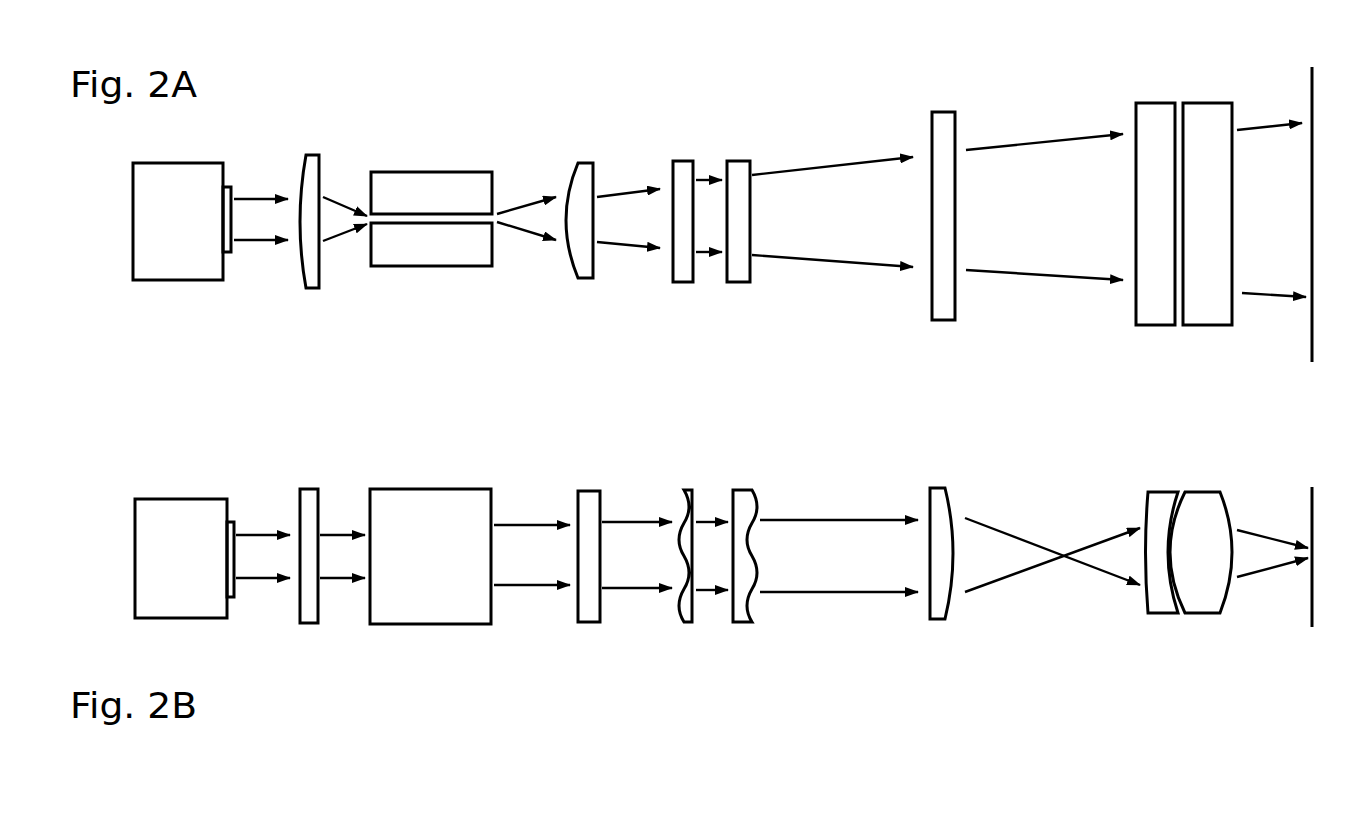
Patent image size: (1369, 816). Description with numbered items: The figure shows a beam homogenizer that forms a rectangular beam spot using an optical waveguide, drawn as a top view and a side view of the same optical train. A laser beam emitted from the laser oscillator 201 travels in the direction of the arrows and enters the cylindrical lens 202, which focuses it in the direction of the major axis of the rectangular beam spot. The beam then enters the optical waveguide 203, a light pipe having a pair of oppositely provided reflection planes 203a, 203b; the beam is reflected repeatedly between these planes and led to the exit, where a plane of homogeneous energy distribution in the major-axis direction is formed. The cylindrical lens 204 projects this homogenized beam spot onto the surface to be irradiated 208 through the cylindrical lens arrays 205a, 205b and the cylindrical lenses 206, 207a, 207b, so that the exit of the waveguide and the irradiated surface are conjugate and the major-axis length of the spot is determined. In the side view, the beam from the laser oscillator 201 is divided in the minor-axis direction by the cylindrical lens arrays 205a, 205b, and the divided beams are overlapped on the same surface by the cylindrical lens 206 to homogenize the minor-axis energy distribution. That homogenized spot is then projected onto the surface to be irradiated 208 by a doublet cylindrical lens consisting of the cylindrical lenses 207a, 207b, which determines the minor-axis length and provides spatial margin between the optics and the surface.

In FIG. 2A, the laser oscillator 201 is at (177, 262).
In FIG. 2B, the laser oscillator 201 is at (172, 520).
In FIG. 2A, the cylindrical lens 202 is at (310, 278).
In FIG. 2B, the cylindrical lens 202 is at (305, 510).
In FIG. 2A, the optical waveguide 203 is at (442, 300).
In FIG. 2B, the optical waveguide 203 is at (440, 510).
In FIG. 2A, the reflection plane 203a is at (431, 297).
In FIG. 2A, the reflection plane 203b is at (463, 198).
In FIG. 2A, the cylindrical lens 204 is at (585, 268).
In FIG. 2B, the cylindrical lens 204 is at (588, 500).
In FIG. 2A, the cylindrical lens array 205a is at (680, 270).
In FIG. 2B, the cylindrical lens array 205a is at (688, 500).
In FIG. 2A, the cylindrical lens array 205b is at (740, 270).
In FIG. 2B, the cylindrical lens array 205b is at (745, 500).
In FIG. 2A, the cylindrical lens 206 is at (940, 312).
In FIG. 2B, the cylindrical lens 206 is at (945, 505).
In FIG. 2A, the cylindrical lens 207a is at (1155, 325).
In FIG. 2B, the cylindrical lens 207a is at (1160, 510).
In FIG. 2A, the cylindrical lens 207b is at (1200, 325).
In FIG. 2B, the cylindrical lens 207b is at (1218, 508).
In FIG. 2A, the surface to be irradiated 208 is at (1312, 335).
In FIG. 2B, the surface to be irradiated 208 is at (1312, 508).